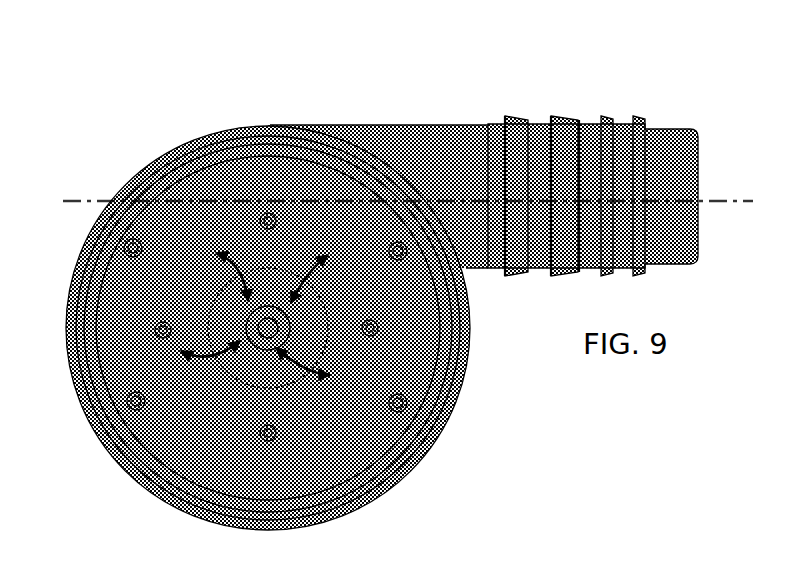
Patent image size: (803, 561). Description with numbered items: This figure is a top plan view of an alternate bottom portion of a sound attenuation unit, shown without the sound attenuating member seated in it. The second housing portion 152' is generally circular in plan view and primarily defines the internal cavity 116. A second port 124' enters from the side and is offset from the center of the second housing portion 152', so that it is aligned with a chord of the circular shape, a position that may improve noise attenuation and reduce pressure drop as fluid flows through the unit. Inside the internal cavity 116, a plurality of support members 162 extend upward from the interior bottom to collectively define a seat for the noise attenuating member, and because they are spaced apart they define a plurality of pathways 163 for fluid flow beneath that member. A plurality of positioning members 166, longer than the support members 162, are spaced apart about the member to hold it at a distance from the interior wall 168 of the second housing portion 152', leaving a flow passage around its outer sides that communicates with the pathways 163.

The second housing portion 152' is at (277, 289).
The second port 124' is at (600, 174).
The positioning members 166 is at (116, 240).
The support members 162 is at (172, 296).
The pathways 163 is at (250, 268).
The internal cavity 116 is at (415, 388).
The interior wall 168 is at (357, 490).